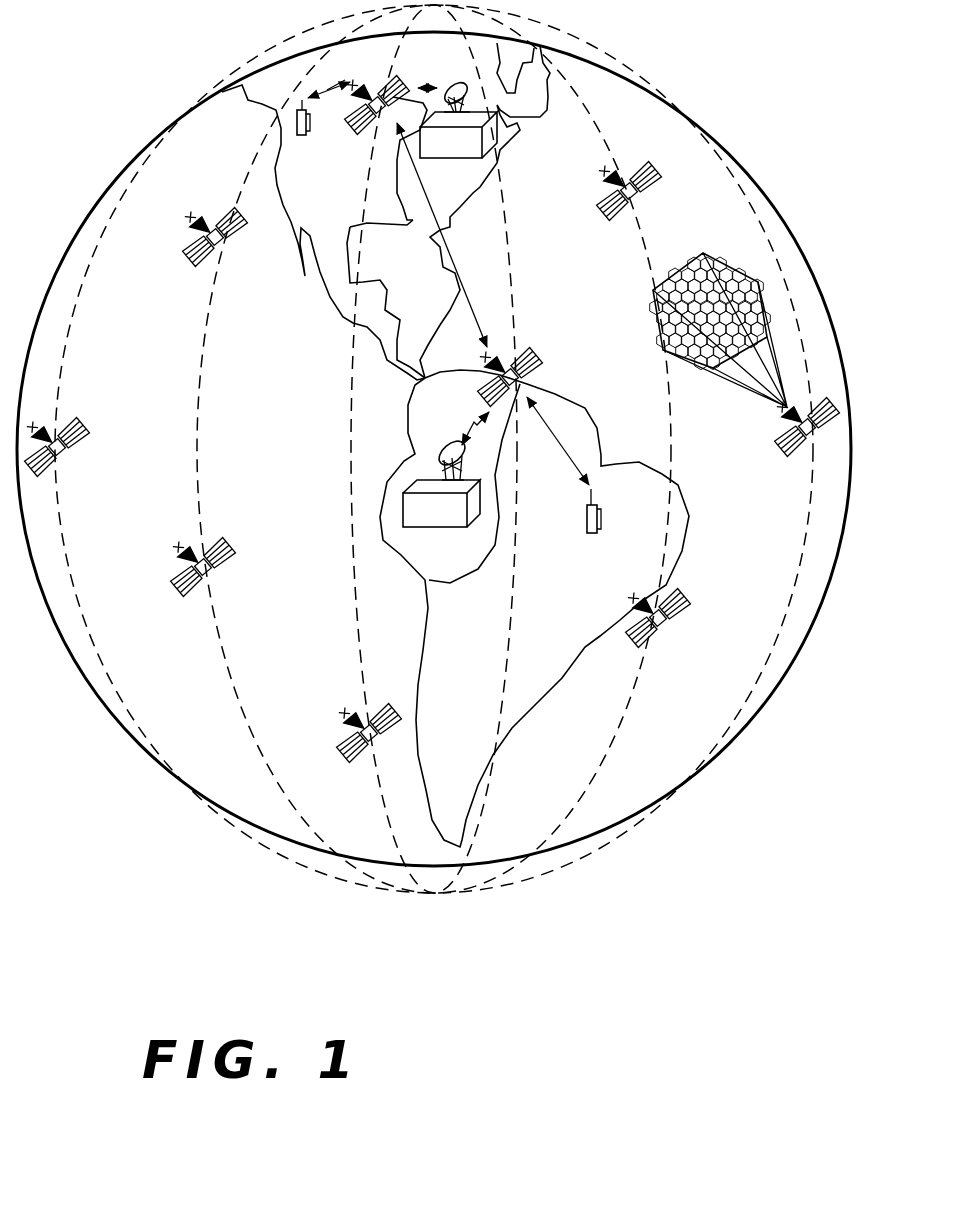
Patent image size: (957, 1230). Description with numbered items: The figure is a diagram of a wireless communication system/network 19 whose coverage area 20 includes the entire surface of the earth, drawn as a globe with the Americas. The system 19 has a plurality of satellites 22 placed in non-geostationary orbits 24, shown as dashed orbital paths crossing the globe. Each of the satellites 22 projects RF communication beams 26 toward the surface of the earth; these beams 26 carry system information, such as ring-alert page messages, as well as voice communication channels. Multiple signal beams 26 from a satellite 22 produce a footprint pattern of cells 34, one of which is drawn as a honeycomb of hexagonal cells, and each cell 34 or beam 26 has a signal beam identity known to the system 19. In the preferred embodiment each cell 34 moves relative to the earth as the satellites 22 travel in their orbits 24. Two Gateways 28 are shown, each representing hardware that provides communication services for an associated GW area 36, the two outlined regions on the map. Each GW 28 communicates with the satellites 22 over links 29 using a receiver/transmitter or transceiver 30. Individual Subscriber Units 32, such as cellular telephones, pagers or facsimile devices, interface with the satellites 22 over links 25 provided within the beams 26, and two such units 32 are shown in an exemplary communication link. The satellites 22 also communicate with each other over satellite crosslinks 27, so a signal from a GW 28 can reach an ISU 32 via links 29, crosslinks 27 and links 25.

The wireless communication system/network 19 is at (200, 893).
The coverage area 20 is at (427, 975).
The satellites 22 is at (198, 256).
The non-geostationary orbits 24 is at (203, 373).
The links 25 is at (327, 78).
The RF communication beams 26 is at (745, 393).
The satellite crosslinks 27 is at (464, 296).
The Gateway 28 is at (455, 162).
The links 29 is at (428, 81).
The receiver/transmitter or transceiver 30 is at (467, 85).
The Individual Subscriber Unit 32 is at (303, 137).
The footprint pattern of cells 34 is at (718, 256).
The GW area 36 is at (463, 377).